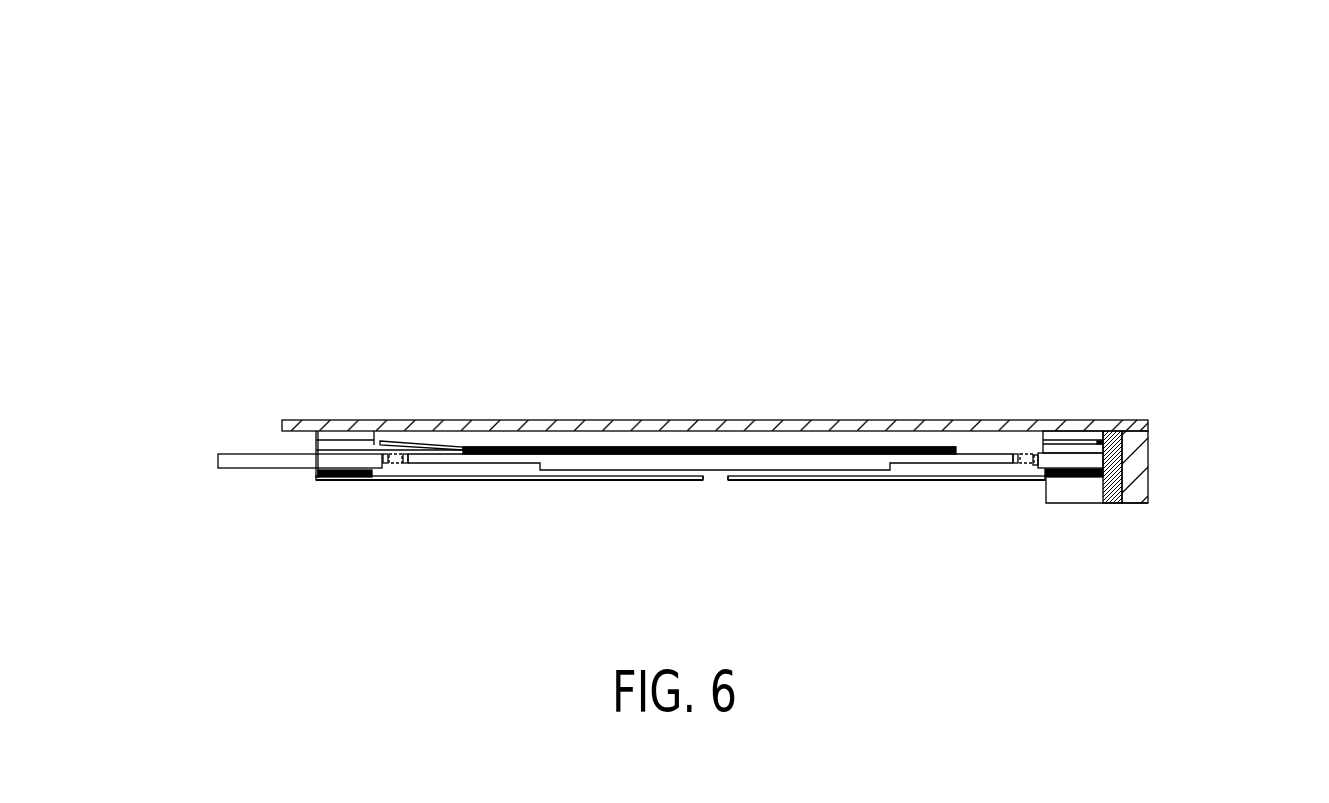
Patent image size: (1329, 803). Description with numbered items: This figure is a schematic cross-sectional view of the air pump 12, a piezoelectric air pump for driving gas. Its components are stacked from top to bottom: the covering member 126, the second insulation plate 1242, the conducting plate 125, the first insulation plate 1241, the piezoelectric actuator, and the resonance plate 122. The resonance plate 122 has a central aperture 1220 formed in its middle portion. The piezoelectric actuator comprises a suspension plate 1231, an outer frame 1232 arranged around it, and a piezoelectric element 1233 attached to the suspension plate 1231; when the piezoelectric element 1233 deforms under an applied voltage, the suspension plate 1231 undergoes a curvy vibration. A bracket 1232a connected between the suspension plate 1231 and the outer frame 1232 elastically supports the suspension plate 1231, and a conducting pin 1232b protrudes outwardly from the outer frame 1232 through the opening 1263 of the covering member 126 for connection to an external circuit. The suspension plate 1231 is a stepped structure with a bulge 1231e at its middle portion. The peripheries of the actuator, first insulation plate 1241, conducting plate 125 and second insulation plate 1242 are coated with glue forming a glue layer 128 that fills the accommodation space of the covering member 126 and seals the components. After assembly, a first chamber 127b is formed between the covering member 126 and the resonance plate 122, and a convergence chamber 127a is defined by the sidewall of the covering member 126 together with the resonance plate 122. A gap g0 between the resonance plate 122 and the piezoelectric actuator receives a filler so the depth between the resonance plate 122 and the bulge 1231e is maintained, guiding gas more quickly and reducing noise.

The air pump 12 is at (1265, 88).
The resonance plate 122 is at (830, 475).
The conducting plate 125 is at (1057, 443).
The covering member 126 is at (1150, 420).
The glue layer 128 is at (1112, 468).
The central aperture 1220 is at (710, 478).
The suspension plate 1231 is at (750, 455).
The bulge 1231e is at (597, 471).
The outer frame 1232 is at (1073, 462).
The bracket 1232a is at (1015, 455).
The conducting pin 1232b is at (293, 463).
The piezoelectric element 1233 is at (713, 453).
The first insulation plate 1241 is at (1067, 450).
The second insulation plate 1242 is at (1050, 435).
The opening 1263 is at (278, 446).
The convergence chamber 127a is at (490, 487).
The first chamber 127b is at (407, 443).
The gap g0 is at (1082, 468).